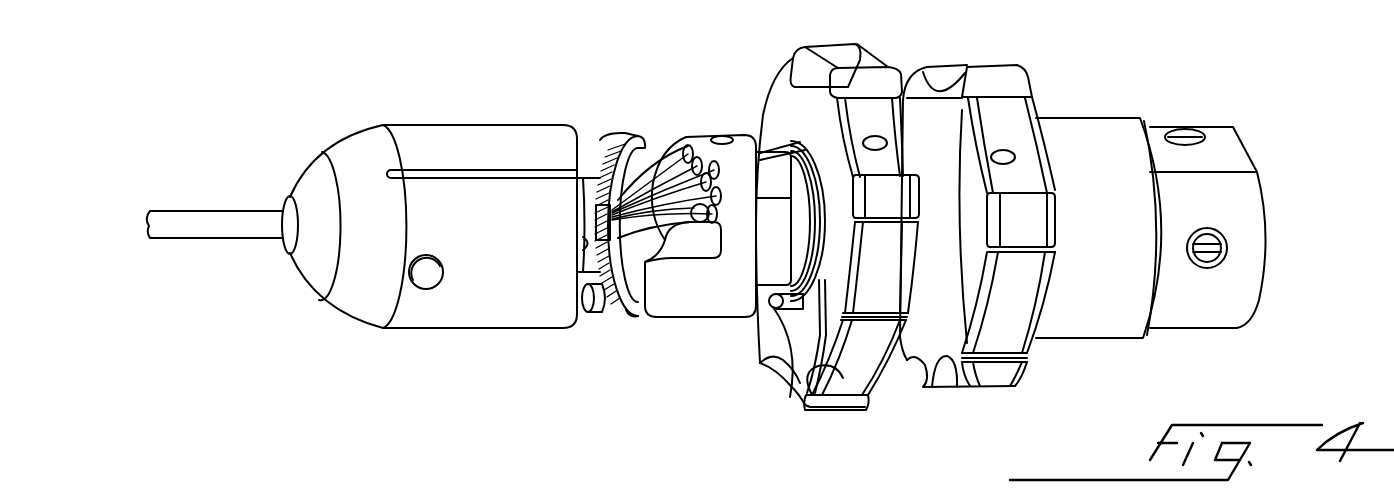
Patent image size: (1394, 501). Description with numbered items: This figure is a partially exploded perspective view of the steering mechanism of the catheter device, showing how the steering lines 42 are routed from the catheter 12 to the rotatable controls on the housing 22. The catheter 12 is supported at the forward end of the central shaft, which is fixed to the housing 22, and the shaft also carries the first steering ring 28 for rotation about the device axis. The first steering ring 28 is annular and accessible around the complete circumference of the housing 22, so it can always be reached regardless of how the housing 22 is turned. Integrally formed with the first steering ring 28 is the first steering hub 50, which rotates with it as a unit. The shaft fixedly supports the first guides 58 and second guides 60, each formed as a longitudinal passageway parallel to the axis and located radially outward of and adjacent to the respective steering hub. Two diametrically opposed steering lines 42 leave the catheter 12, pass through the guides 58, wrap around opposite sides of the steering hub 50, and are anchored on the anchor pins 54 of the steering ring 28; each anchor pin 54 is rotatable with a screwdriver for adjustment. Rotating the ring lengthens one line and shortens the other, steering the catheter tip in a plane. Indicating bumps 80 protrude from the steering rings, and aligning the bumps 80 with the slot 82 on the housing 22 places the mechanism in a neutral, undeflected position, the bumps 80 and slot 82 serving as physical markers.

The catheter 12 is at (603, 165).
The housing 22 is at (492, 310).
The first steering ring 28 is at (800, 383).
The steering lines 42 is at (652, 145).
The first steering hub 50 is at (772, 282).
The anchor pins 54 is at (770, 372).
The first guides 58 is at (700, 140).
The second guides 60 is at (417, 356).
The indicating bumps 80 is at (875, 140).
The slot 82 is at (457, 172).